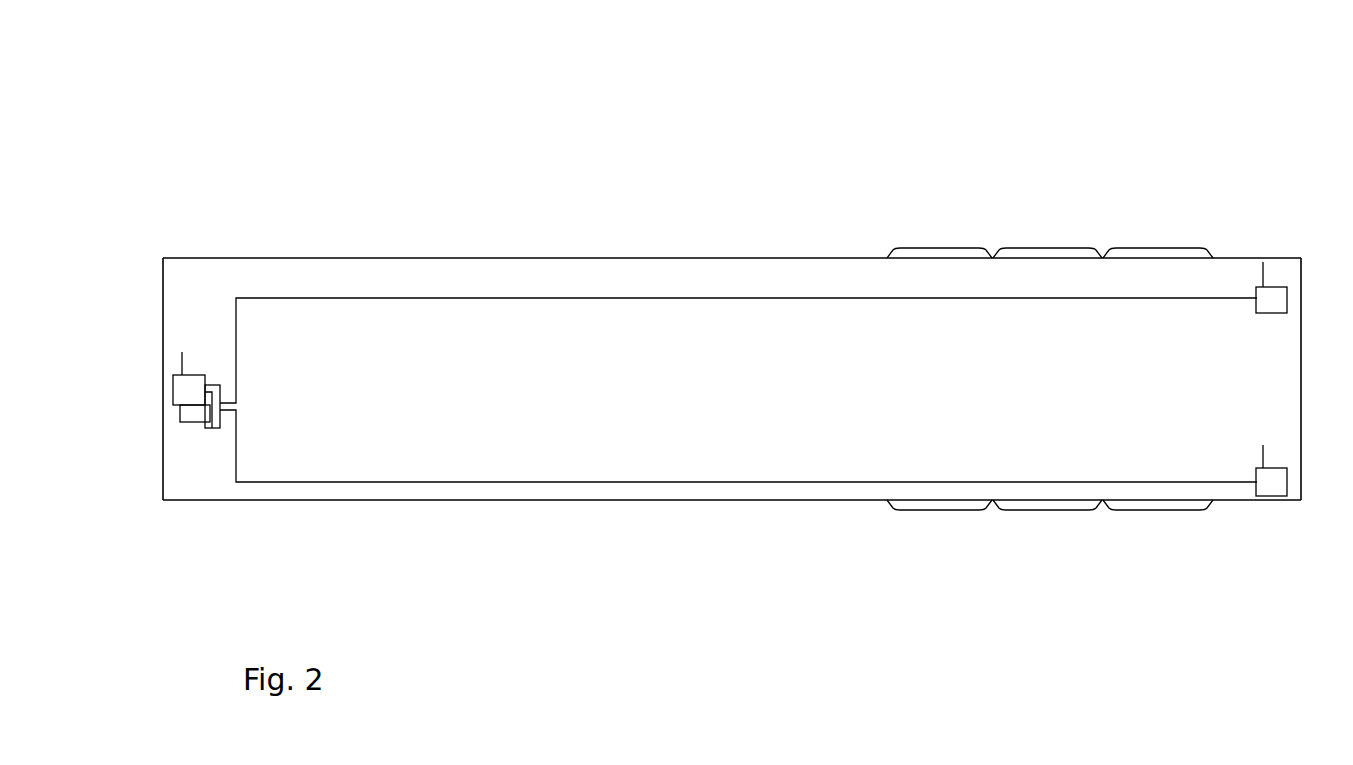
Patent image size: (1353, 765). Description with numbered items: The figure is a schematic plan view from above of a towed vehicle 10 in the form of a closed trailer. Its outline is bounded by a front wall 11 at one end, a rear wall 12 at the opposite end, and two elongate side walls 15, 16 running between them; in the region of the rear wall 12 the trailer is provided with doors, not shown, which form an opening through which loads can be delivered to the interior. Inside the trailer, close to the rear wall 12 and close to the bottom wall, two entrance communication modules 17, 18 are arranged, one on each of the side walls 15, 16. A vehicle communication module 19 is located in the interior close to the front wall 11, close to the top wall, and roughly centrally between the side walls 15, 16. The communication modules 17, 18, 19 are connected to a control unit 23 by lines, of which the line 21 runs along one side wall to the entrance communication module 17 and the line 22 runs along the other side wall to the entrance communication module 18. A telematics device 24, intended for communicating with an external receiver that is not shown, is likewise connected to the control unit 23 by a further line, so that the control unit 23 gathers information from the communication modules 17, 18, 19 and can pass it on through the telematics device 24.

The towed vehicle 10 is at (755, 168).
The front wall 11 is at (163, 281).
The rear wall 12 is at (1301, 283).
The side wall 15 is at (540, 258).
The side wall 16 is at (595, 500).
The entrance communication module 17 is at (1256, 298).
The entrance communication module 18 is at (1275, 490).
The vehicle communication module 19 is at (190, 392).
The line 21 is at (673, 298).
The line 22 is at (750, 482).
The control unit 23 is at (190, 415).
The telematics device 24 is at (210, 428).